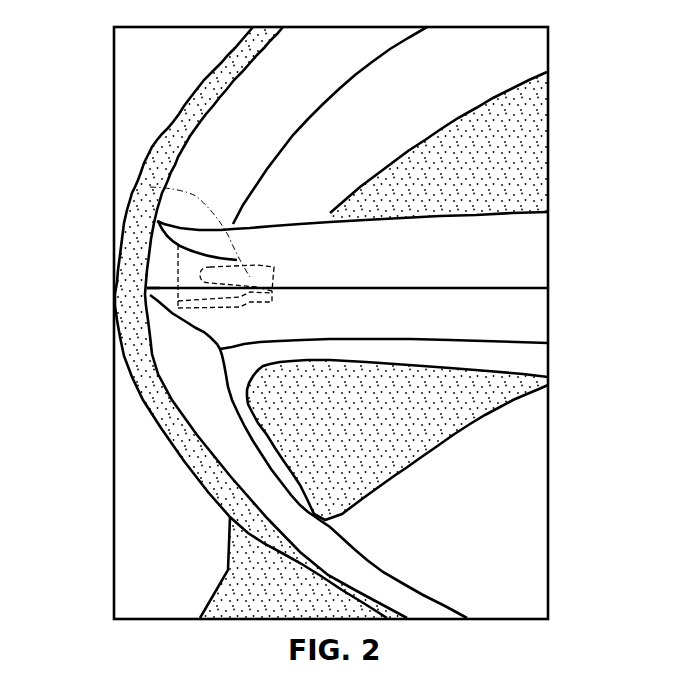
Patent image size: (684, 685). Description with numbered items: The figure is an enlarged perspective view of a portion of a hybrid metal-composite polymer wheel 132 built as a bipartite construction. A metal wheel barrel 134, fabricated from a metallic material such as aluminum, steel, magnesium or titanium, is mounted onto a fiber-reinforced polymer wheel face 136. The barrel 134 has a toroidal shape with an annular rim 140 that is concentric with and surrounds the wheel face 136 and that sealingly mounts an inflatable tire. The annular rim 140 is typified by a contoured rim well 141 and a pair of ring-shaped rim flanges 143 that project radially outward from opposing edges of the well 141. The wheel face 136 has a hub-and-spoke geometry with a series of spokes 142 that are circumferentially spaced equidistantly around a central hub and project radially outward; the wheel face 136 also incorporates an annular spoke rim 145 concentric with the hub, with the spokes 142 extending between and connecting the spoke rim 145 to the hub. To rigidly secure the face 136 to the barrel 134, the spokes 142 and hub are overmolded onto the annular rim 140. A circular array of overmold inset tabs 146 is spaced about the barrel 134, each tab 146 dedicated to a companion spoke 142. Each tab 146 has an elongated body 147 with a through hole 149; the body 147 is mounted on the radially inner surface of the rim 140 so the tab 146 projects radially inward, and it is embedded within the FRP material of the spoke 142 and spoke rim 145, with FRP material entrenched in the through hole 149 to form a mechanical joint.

The hybrid metal-composite polymer wheel 132 is at (143, 58).
The metal wheel barrel 134 is at (140, 174).
The fiber-reinforced polymer wheel face 136 is at (180, 148).
The annular rim 140 is at (148, 293).
The contoured rim well 141 is at (228, 570).
The spoke 142 is at (483, 230).
The rim flange 143 is at (157, 427).
The annular spoke rim 145 is at (190, 373).
The overmold inset tab 146 is at (158, 255).
The elongated body 147 is at (237, 262).
The through hole 149 is at (150, 187).